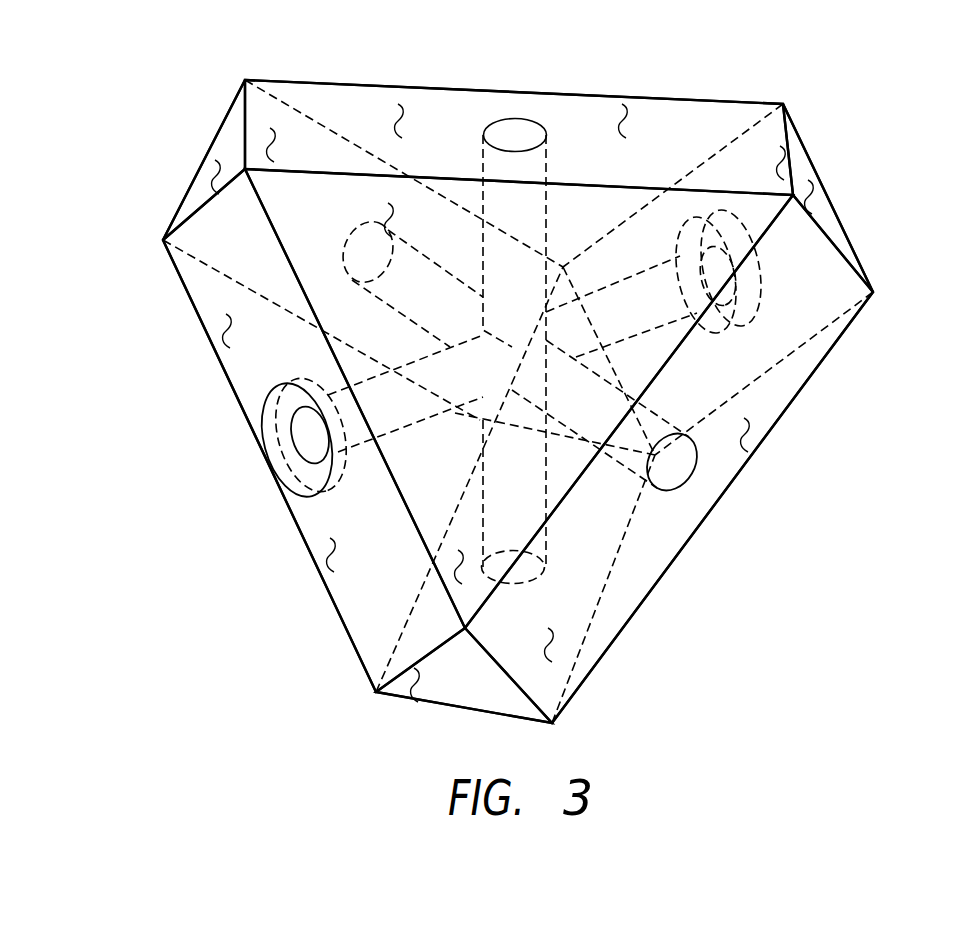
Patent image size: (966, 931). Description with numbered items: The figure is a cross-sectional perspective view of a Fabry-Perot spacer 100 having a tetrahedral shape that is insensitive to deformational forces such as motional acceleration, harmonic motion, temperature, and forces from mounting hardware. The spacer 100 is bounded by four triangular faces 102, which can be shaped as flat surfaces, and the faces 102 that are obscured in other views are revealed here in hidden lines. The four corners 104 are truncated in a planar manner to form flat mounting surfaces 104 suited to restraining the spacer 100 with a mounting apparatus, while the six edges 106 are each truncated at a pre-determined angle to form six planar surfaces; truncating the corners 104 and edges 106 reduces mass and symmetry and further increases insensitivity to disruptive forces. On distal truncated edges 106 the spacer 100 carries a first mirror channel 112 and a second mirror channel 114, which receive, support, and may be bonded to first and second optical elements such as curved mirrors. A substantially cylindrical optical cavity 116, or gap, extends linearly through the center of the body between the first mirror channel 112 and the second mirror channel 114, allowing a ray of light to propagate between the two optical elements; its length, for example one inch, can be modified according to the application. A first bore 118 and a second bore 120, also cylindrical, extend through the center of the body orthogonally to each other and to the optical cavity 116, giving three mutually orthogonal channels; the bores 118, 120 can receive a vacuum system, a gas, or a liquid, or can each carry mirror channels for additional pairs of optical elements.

The Fabry-Perot spacer 100 is at (200, 586).
The triangular face 102 is at (388, 203).
The corner 104 is at (217, 163).
The edge 106 is at (402, 106).
The first mirror channel 112 is at (288, 402).
The second mirror channel 114 is at (768, 277).
The optical cavity 116 is at (312, 435).
The first bore 118 is at (514, 142).
The second bore 120 is at (668, 461).